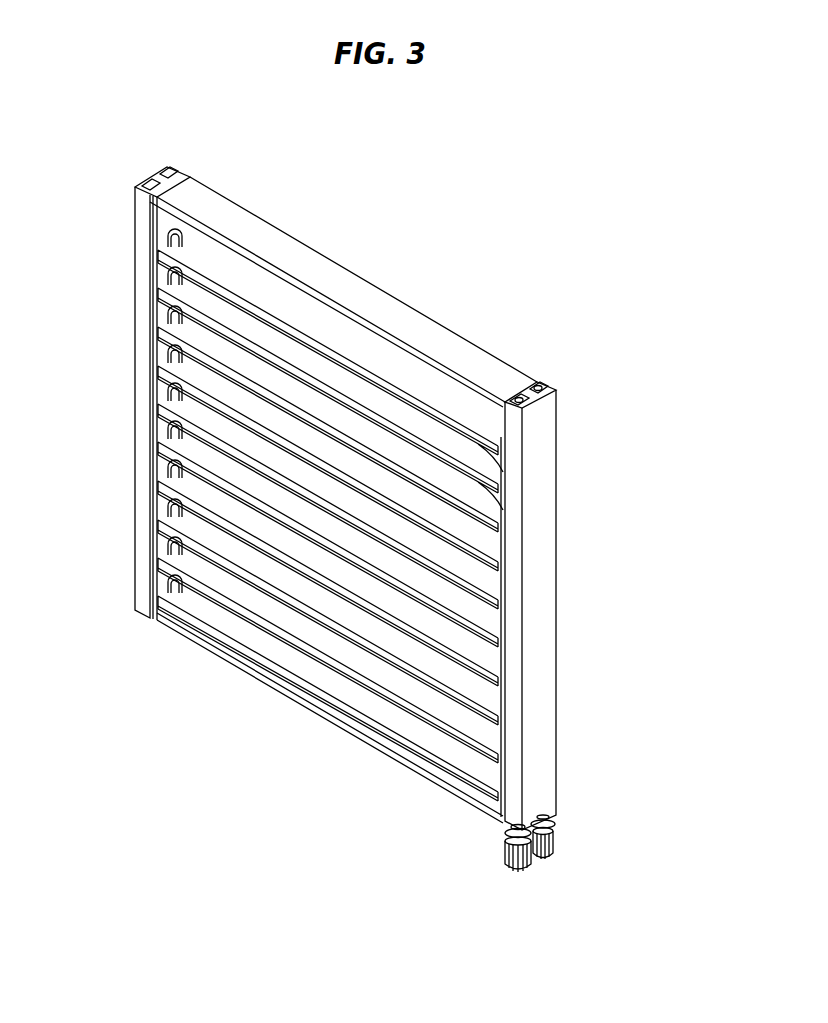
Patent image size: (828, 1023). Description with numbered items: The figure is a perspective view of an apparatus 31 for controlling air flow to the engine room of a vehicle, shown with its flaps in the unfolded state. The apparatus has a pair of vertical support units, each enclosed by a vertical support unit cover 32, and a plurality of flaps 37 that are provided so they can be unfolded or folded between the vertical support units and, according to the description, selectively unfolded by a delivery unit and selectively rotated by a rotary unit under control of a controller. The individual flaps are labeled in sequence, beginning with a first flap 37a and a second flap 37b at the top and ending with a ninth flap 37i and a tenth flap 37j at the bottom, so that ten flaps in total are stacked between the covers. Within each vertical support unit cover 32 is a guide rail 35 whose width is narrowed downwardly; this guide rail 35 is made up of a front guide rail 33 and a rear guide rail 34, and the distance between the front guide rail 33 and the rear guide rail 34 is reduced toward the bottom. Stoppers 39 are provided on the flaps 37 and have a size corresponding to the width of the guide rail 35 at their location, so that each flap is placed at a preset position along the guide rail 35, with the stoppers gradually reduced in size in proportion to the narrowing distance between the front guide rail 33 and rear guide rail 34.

The louver assembly 31 is at (418, 146).
The vertical support unit cover 32 is at (542, 415).
The front guide rail 33 is at (158, 390).
The rear guide rail 34 is at (163, 436).
The guide rail 35 is at (52, 380).
The flaps 37 is at (670, 487).
The flap 37a is at (502, 481).
The flap 37b is at (502, 516).
The flap 37i is at (502, 755).
The flap 37j is at (502, 792).
The stoppers 39 is at (163, 322).